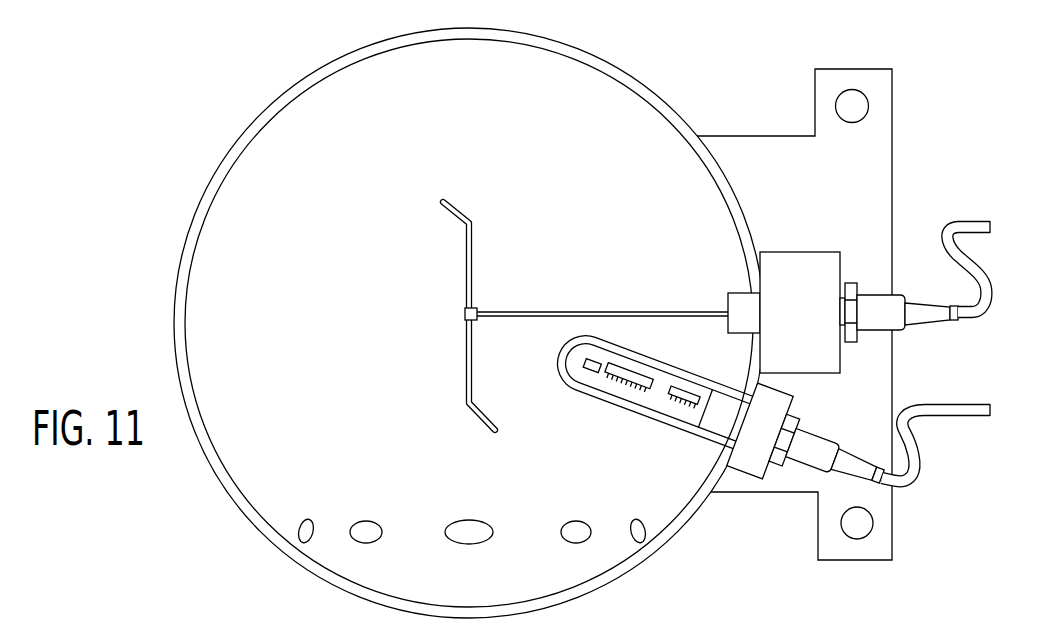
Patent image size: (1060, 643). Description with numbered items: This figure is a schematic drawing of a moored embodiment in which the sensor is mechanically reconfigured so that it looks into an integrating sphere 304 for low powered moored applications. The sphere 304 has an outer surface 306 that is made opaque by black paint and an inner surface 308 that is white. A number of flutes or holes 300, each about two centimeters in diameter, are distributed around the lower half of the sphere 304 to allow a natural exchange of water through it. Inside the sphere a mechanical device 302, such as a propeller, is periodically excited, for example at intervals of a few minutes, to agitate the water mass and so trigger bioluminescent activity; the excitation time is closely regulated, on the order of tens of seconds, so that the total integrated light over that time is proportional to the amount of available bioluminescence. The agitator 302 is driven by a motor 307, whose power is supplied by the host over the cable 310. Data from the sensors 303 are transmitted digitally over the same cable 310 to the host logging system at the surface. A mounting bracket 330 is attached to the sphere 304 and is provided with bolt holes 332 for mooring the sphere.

The flutes or holes 300 is at (563, 533).
The mechanical device 302 is at (463, 212).
The sensors 303 is at (584, 365).
The integrating sphere 304 is at (438, 309).
The outer surface 306 is at (213, 174).
The motor 307 is at (803, 264).
The inner surface 308 is at (199, 240).
The cable 310 is at (962, 404).
The mounting bracket 330 is at (893, 128).
The bolt holes 332 is at (865, 103).